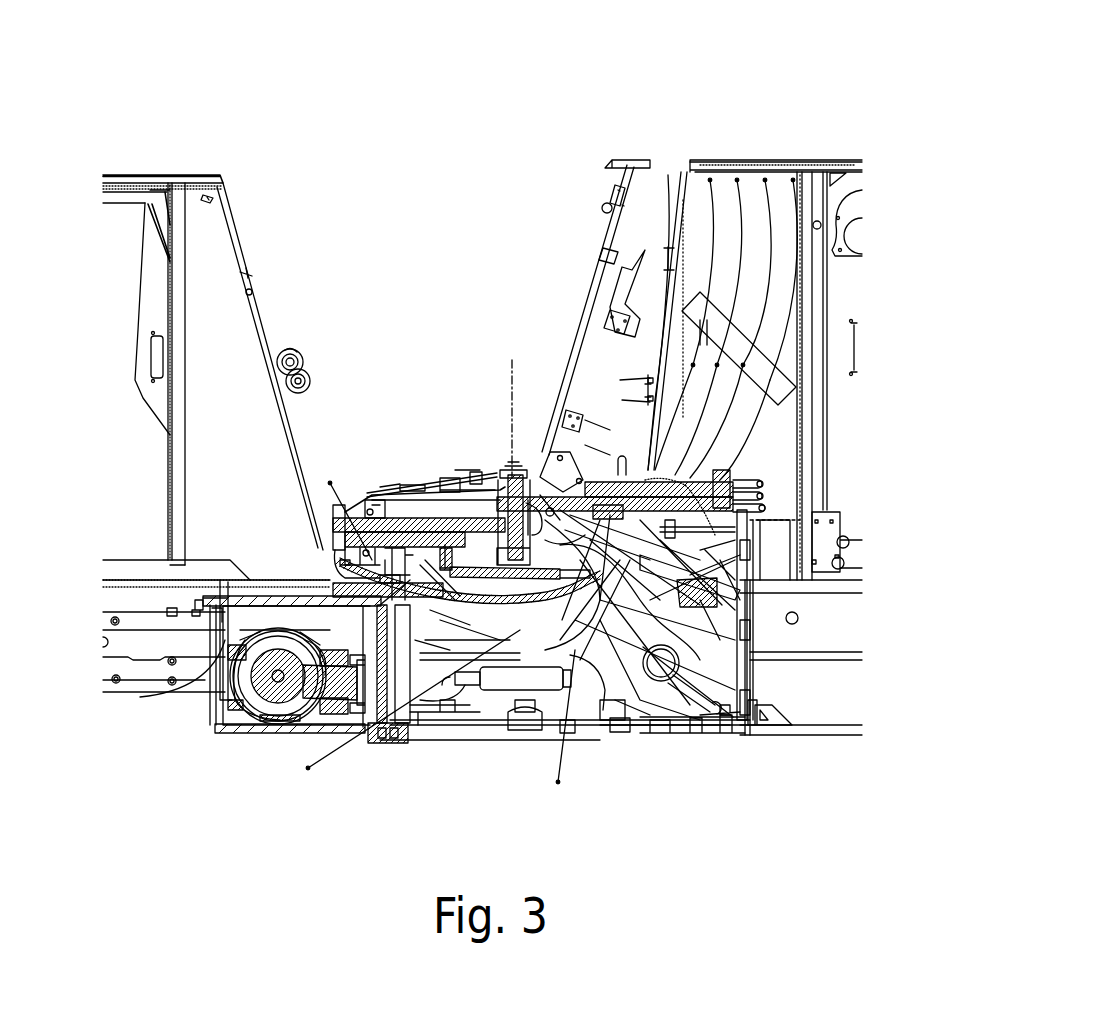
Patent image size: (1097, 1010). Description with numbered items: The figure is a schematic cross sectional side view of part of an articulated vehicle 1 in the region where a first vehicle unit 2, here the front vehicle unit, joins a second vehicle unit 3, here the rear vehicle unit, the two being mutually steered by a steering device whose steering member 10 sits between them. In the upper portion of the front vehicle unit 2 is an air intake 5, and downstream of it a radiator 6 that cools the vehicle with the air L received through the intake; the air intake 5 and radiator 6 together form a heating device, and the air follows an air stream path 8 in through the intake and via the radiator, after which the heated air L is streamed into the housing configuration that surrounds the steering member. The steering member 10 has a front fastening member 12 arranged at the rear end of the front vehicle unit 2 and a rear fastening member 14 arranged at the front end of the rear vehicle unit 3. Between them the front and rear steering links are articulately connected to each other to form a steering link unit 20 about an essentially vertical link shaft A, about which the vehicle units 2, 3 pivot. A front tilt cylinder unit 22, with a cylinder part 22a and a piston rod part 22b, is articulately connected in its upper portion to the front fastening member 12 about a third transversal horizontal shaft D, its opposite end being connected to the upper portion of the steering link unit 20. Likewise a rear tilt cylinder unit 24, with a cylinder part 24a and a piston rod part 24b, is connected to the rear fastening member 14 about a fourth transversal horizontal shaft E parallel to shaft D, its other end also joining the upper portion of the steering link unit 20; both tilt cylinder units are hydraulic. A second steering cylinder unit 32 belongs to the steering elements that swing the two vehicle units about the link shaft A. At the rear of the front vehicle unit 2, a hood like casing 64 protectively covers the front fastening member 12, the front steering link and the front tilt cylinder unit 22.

The articulated vehicle 1 is at (291, 147).
The first vehicle unit 2 is at (840, 157).
The second vehicle unit 3 is at (160, 176).
The air intake 5 is at (755, 162).
The radiator 6 is at (732, 326).
The air stream path 8 is at (747, 435).
The steering member 10 is at (532, 744).
The front fastening member 12 is at (709, 594).
The rear fastening member 14 is at (388, 690).
The steering link unit 20 is at (582, 605).
The front tilt cylinder unit 22 is at (578, 491).
The cylinder part 22a is at (592, 497).
The piston rod part 22b is at (522, 480).
The rear tilt cylinder unit 24 is at (452, 516).
The cylinder part 24a is at (380, 524).
The piston rod part 24b is at (483, 480).
The second steering cylinder unit 32 is at (518, 684).
The hood like casing 64 is at (605, 205).
The air L is at (793, 180).
The vertical link shaft A is at (512, 402).
The third transversal horizontal shaft D is at (735, 480).
The fourth transversal horizontal shaft E is at (405, 495).